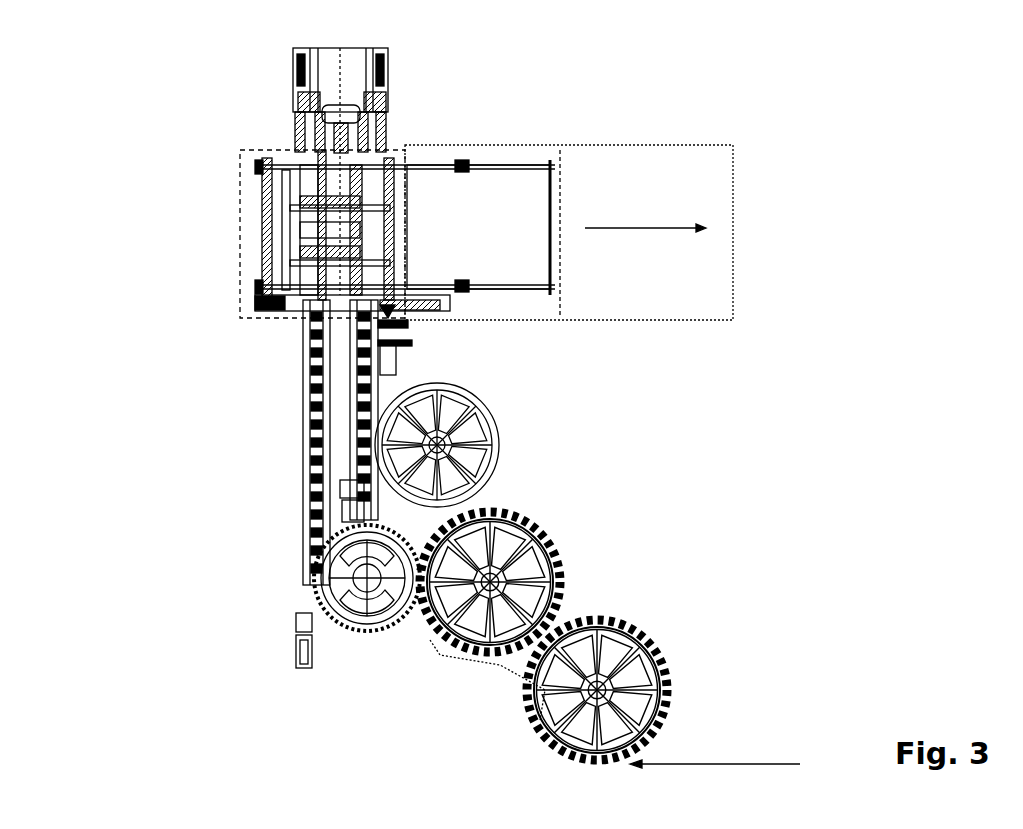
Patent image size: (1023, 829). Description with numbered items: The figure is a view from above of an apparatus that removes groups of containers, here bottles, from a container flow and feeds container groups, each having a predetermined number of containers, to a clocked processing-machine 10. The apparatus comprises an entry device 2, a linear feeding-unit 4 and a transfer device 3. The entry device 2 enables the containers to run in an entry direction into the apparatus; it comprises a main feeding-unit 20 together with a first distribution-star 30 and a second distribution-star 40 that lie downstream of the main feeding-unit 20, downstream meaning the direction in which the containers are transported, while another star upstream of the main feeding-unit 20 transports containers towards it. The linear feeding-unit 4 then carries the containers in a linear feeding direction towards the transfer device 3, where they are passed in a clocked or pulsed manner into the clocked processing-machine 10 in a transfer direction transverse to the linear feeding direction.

The entry device 2 is at (682, 427).
The transfer device 3 is at (238, 235).
The linear feeding-unit 4 is at (268, 420).
The clocked processing-machine 10 is at (690, 183).
The main feeding-unit 20 is at (455, 640).
The first distribution-star 30 is at (497, 444).
The second distribution-star 40 is at (333, 637).